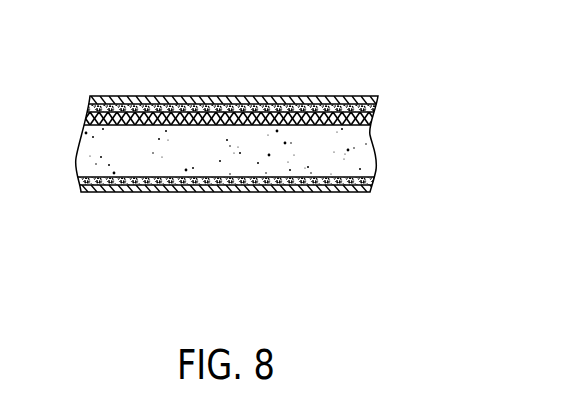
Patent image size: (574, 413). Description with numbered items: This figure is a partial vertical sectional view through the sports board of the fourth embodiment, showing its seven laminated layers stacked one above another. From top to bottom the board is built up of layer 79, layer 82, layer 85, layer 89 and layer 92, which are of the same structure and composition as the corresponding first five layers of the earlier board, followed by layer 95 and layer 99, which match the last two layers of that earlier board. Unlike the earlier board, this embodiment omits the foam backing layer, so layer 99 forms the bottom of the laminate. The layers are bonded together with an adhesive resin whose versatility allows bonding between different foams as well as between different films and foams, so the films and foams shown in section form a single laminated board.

The layer 79 is at (378, 98).
The layer 82 is at (377, 108).
The layer 85 is at (375, 115).
The layer 89 is at (374, 123).
The layer 92 is at (375, 149).
The layer 95 is at (373, 180).
The layer 99 is at (374, 186).